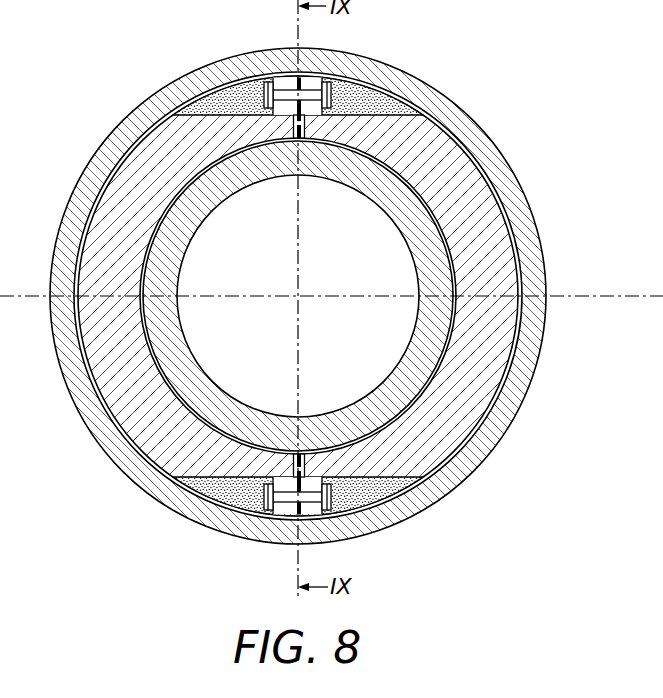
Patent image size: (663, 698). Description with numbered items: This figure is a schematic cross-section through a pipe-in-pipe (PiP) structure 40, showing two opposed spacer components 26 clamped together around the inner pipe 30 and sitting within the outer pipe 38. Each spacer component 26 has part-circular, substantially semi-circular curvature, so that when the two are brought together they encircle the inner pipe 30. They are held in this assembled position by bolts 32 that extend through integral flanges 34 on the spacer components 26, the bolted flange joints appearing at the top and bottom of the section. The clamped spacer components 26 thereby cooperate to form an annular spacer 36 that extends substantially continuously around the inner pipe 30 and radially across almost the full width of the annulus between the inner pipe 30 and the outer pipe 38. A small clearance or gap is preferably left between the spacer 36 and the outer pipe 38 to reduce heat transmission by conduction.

The spacer component 26 is at (478, 197).
The inner pipe 30 is at (193, 381).
The bolt 32 is at (270, 92).
The integral flange 34 is at (309, 112).
The annular spacer 36 is at (163, 220).
The outer pipe 38 is at (102, 155).
The PiP structure 40 is at (484, 53).